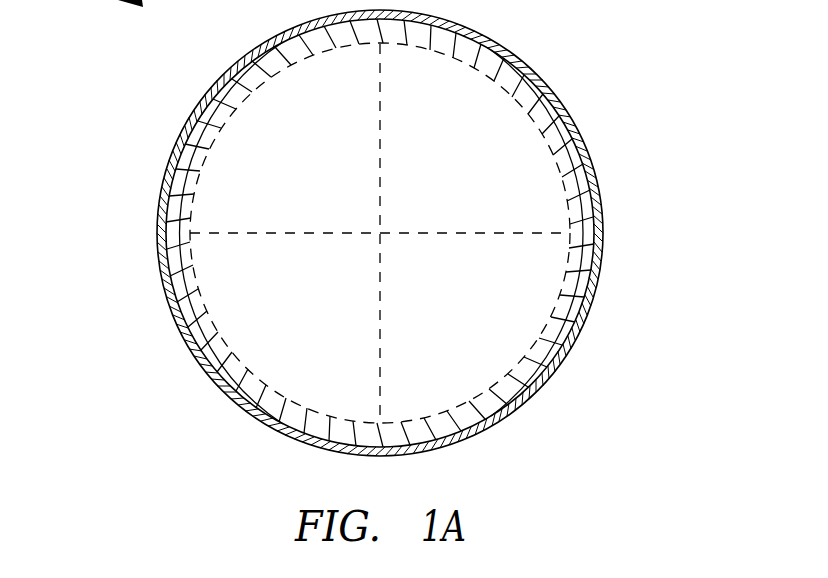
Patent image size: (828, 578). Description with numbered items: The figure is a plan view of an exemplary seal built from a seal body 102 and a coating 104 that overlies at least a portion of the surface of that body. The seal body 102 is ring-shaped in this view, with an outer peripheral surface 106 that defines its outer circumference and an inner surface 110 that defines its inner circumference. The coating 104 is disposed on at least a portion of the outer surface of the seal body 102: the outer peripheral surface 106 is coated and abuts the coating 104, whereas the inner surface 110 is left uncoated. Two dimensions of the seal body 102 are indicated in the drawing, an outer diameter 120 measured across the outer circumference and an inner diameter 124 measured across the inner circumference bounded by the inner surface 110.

The seal body 102 is at (574, 187).
The coating 104 is at (553, 380).
The outer peripheral surface 106 is at (591, 279).
The inner surface 110 is at (203, 158).
The outer diameter 120 is at (382, 175).
The inner diameter 124 is at (206, 222).